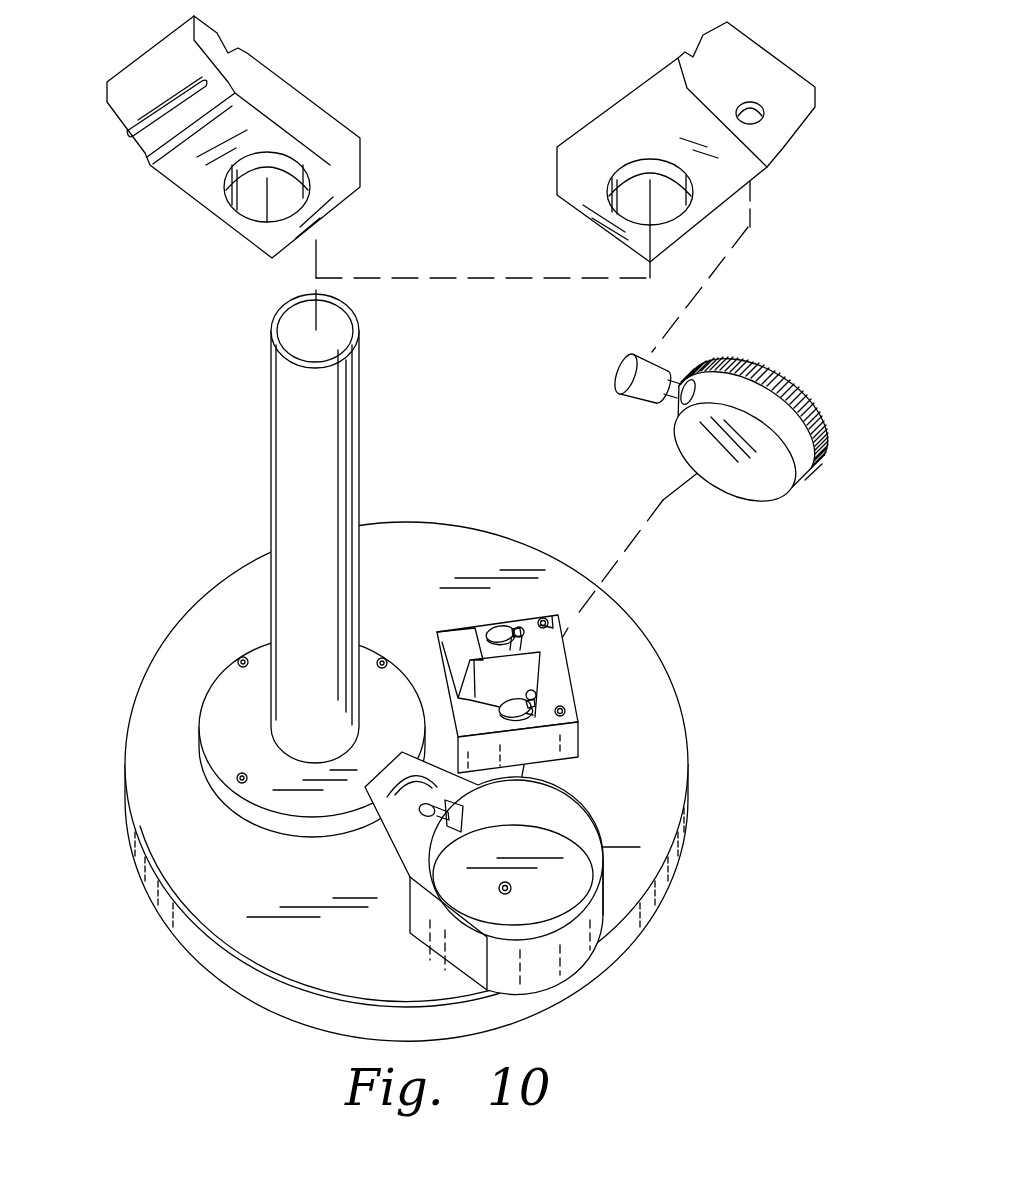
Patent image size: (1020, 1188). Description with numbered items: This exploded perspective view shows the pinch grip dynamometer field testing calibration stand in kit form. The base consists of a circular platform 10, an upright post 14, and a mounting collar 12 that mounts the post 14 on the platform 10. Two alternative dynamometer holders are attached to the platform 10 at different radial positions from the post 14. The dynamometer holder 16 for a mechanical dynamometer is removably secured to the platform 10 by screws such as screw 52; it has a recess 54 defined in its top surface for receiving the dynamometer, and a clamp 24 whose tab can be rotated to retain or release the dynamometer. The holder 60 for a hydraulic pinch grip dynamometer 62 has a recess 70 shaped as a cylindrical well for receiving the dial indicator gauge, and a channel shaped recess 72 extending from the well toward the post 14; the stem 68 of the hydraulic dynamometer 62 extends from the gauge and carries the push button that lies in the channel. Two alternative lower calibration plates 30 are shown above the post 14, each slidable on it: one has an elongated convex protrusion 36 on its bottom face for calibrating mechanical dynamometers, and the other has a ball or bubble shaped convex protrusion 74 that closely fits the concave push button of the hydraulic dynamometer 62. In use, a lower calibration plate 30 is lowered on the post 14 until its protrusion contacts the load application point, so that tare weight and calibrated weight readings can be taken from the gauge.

The platform 10 is at (677, 748).
The mounting collar 12 is at (207, 720).
The post 14 is at (284, 522).
The dynamometer holder 16 is at (570, 675).
The clamp 24 is at (492, 620).
The lower calibration plate 30 is at (322, 122).
The elongated convex protrusion 36 is at (128, 137).
The screw 52 is at (553, 617).
The recess 54 is at (563, 708).
The holder 60 is at (563, 967).
The hydraulic pinch grip dynamometer 62 is at (810, 477).
The stem 68 is at (610, 380).
The recess 70 is at (510, 890).
The recess 72 is at (382, 853).
The convex protrusion 74 is at (783, 143).